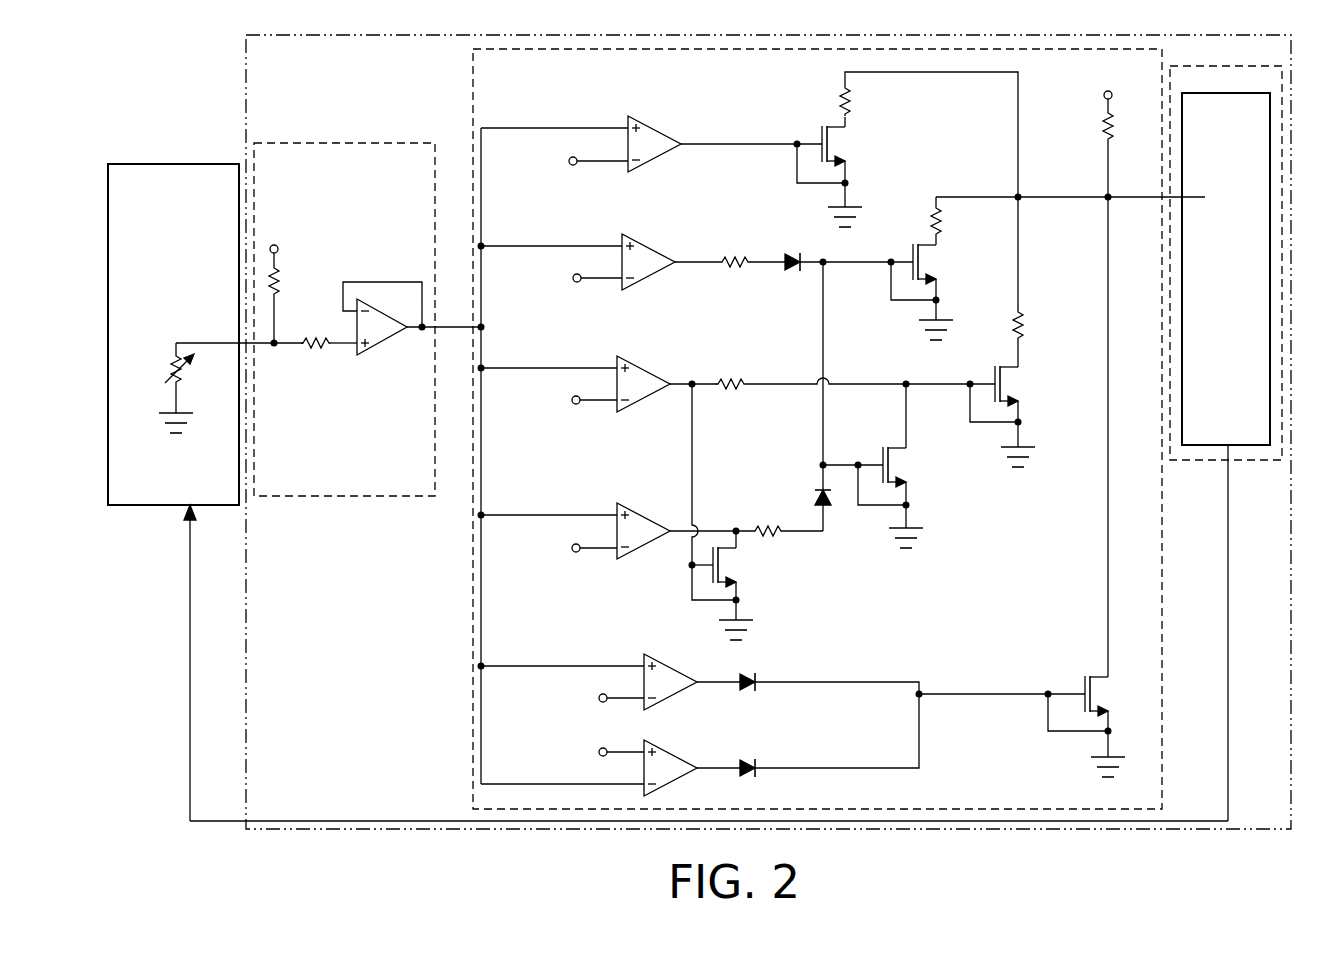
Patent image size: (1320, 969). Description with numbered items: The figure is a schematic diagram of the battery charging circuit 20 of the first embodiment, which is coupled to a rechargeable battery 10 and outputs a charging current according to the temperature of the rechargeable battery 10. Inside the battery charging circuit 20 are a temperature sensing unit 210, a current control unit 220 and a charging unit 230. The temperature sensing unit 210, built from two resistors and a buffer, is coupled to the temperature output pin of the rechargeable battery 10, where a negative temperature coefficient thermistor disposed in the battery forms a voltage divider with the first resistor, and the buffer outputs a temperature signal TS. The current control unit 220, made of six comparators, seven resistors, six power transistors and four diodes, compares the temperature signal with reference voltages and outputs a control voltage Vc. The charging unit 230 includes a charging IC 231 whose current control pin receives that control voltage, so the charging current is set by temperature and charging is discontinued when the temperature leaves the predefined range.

The rechargeable battery 10 is at (193, 164).
The battery charging circuit 20 is at (246, 52).
The temperature sensing unit 210 is at (330, 497).
The current control unit 220 is at (473, 640).
The charging unit 230 is at (1192, 461).
The charging IC 231 is at (1252, 446).